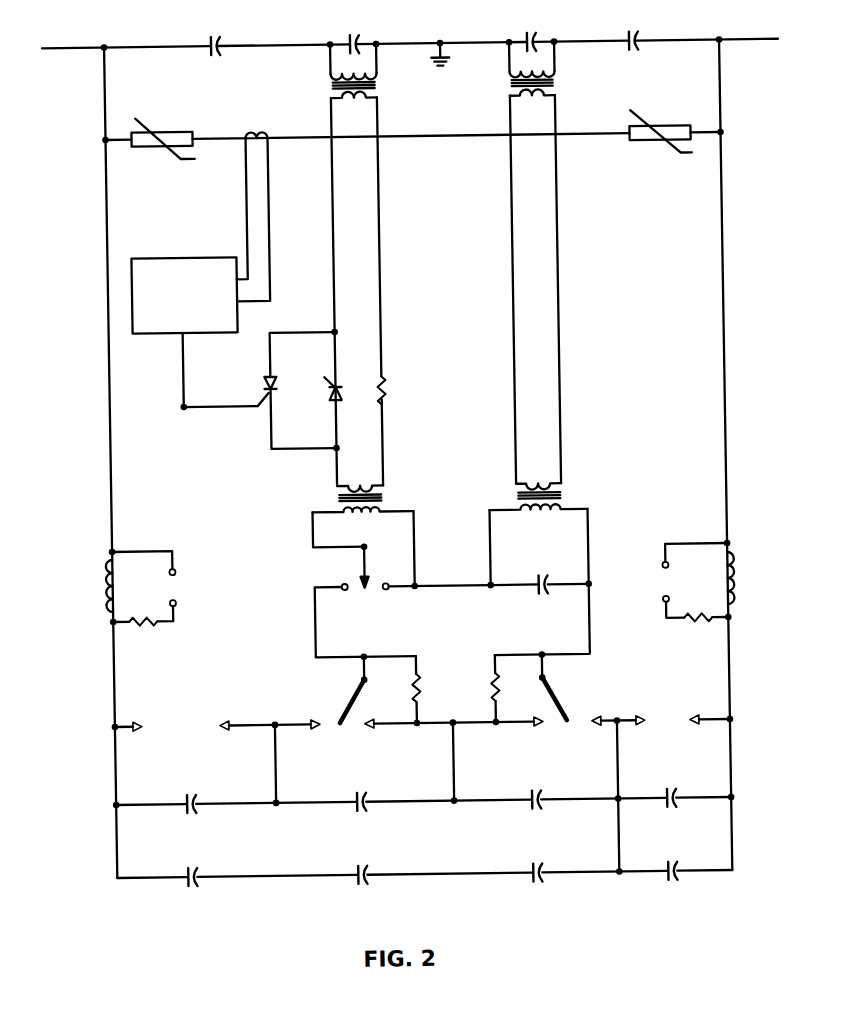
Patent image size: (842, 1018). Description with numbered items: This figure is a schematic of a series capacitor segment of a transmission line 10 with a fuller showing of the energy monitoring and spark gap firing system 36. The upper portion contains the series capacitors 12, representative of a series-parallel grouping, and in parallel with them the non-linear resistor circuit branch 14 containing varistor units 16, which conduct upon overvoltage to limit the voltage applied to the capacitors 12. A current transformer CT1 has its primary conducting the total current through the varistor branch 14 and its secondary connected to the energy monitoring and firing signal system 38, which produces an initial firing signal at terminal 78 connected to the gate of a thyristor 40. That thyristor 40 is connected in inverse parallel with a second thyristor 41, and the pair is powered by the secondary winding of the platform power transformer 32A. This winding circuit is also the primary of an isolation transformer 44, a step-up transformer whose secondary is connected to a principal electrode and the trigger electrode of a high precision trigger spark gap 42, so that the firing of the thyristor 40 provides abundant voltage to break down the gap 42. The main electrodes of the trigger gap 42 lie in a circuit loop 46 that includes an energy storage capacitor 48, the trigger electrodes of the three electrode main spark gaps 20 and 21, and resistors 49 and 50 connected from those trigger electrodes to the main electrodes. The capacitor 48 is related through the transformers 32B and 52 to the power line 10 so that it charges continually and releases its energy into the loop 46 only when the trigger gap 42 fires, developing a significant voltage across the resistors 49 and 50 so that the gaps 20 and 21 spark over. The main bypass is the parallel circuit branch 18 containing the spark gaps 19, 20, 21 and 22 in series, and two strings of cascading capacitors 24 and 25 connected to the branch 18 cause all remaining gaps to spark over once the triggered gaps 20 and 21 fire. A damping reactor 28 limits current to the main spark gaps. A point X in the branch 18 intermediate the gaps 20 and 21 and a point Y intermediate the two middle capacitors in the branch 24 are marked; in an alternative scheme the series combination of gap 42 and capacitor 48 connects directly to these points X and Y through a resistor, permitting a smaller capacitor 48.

The transmission line 10 is at (83, 46).
The capacitors 12 is at (212, 40).
The non-linear resistor circuit branch 14 is at (120, 139).
The varistor units 16 is at (165, 132).
The current transformer CT1 is at (252, 133).
The platform power transformer 32A is at (377, 98).
The transformer 32B is at (558, 100).
The energy monitoring and firing signal system 38 is at (162, 259).
The thyristor 40 is at (257, 386).
The second thyristor 41 is at (320, 402).
The terminal 78 is at (176, 410).
The energy monitoring and spark gap firing system 36 is at (460, 478).
The isolation transformer 44 is at (325, 500).
The transformer 52 is at (576, 502).
The energy storage capacitor 48 is at (536, 566).
The trigger spark gap 42 is at (370, 594).
The circuit loop 46 is at (306, 637).
The resistor 49 is at (410, 684).
The resistor 50 is at (480, 684).
The damping reactor 28 is at (96, 590).
The parallel circuit branch 18 is at (130, 725).
The spark gap 19 is at (206, 724).
The spark gap 20 is at (302, 722).
The spark gap 21 is at (578, 722).
The spark gap 22 is at (682, 722).
The cascading capacitor string 24 is at (142, 804).
The cascading capacitor string 25 is at (142, 877).
The point X is at (448, 722).
The point Y is at (448, 808).